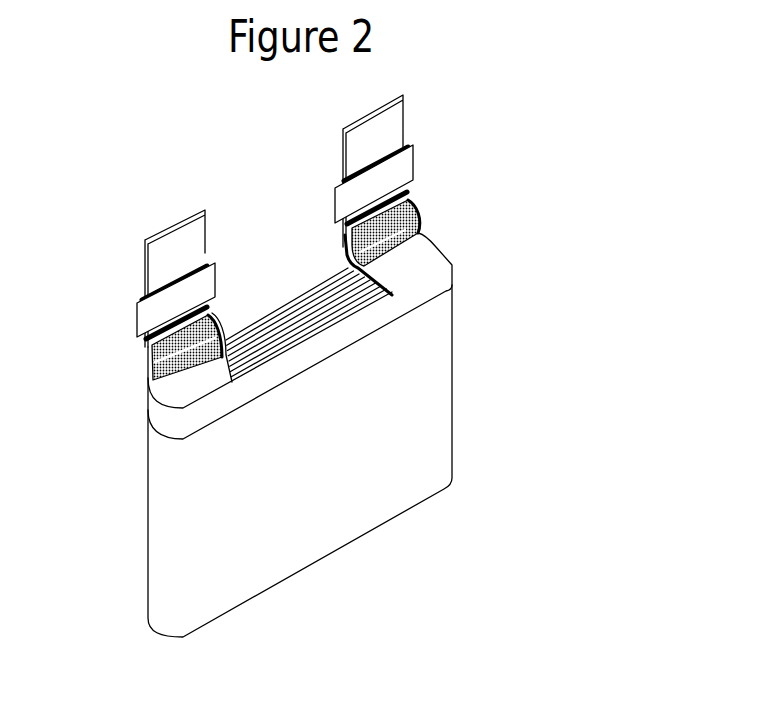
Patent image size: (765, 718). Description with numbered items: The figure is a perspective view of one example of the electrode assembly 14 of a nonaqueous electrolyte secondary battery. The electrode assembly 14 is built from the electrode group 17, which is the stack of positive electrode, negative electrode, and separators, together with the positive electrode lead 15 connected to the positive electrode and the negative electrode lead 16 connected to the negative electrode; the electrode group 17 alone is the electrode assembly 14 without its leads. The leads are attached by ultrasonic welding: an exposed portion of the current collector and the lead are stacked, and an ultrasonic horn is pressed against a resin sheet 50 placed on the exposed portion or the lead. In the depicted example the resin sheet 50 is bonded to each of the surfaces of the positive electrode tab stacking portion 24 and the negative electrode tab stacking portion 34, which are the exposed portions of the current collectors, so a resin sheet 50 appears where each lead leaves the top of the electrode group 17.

The electrode assembly 14 is at (553, 104).
The positive electrode lead 15 is at (157, 262).
The negative electrode lead 16 is at (402, 110).
The electrode group 17 is at (435, 424).
The positive electrode tab stacking portion 24 is at (143, 341).
The negative electrode tab stacking portion 34 is at (405, 186).
The resin sheet 50 is at (152, 382).